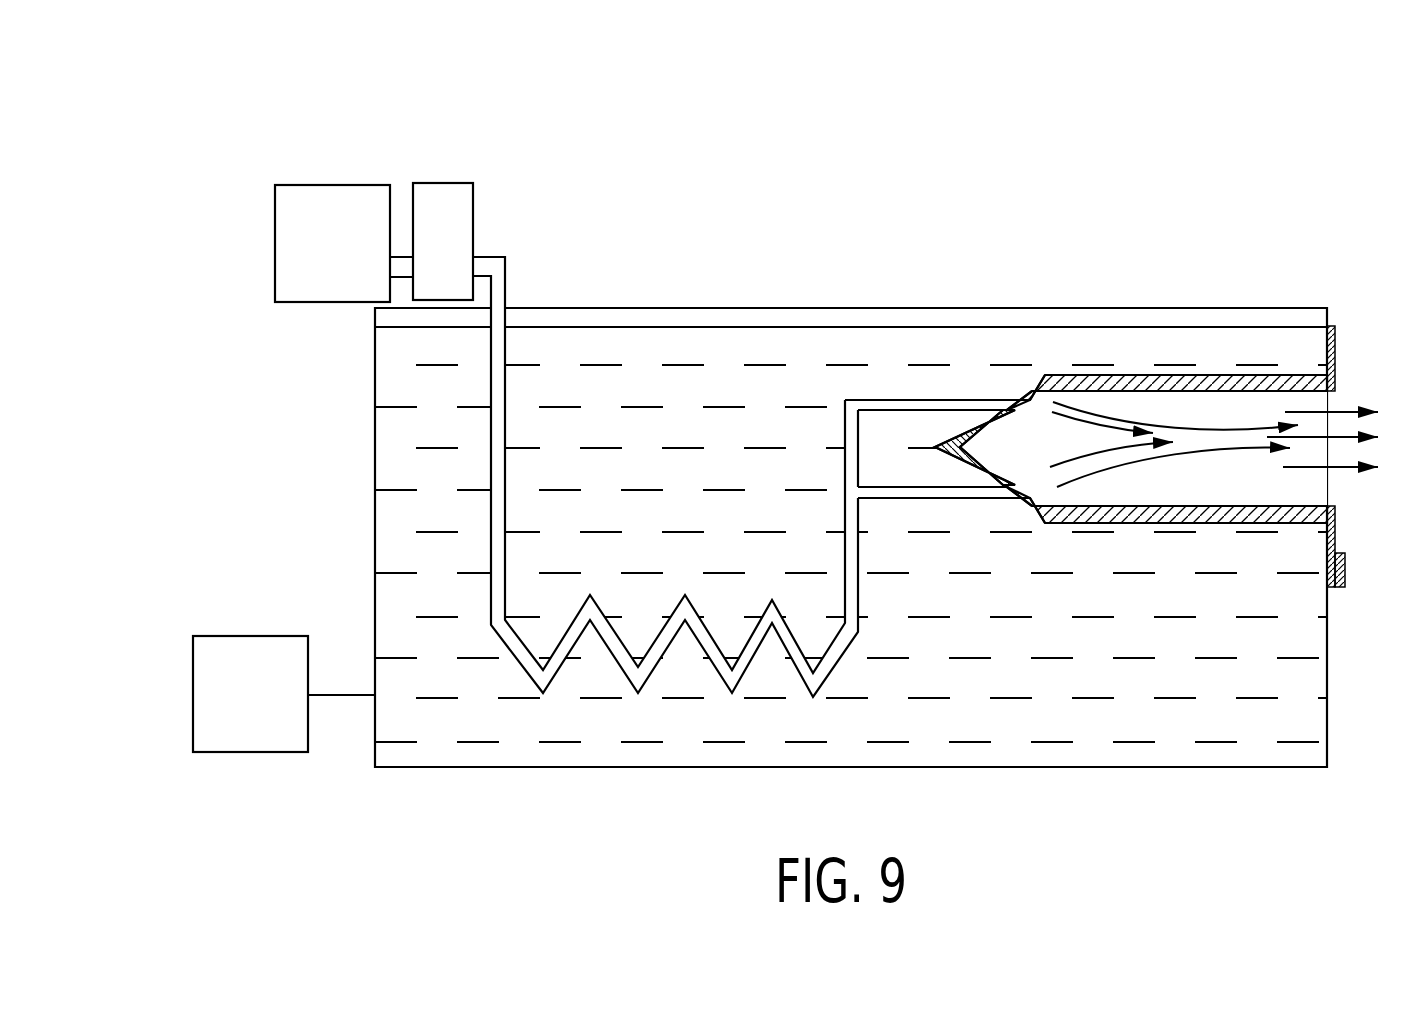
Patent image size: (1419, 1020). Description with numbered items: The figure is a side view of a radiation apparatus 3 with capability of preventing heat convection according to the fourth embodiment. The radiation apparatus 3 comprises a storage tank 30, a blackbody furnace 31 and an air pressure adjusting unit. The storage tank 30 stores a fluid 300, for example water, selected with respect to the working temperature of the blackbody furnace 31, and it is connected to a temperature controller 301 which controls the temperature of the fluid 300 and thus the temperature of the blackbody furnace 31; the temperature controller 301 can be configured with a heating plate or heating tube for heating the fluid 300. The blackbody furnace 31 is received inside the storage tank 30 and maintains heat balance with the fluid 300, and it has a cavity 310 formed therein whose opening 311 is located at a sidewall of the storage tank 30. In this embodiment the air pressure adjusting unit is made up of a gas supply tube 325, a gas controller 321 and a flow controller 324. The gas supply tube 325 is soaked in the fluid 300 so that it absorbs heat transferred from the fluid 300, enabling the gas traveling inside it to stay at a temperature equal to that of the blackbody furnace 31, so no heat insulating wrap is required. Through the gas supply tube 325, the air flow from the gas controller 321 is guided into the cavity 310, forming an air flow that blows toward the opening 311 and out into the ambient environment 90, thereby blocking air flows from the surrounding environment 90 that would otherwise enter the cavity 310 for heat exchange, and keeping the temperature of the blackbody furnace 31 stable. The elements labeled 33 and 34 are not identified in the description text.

The radiation apparatus 3 is at (502, 381).
The storage tank 30 is at (775, 537).
The fluid 300 is at (851, 553).
The temperature controller 301 is at (213, 687).
The blackbody furnace 31 is at (1225, 528).
The cavity 310 is at (1057, 458).
The opening 311 is at (1317, 407).
The gas controller 321 is at (303, 262).
The flow controller 324 is at (462, 223).
The gas supply tube 325 is at (907, 400).
The stop block 33 is at (1345, 573).
The end plate 34 is at (1333, 510).
The ambient environment 90 is at (1415, 215).